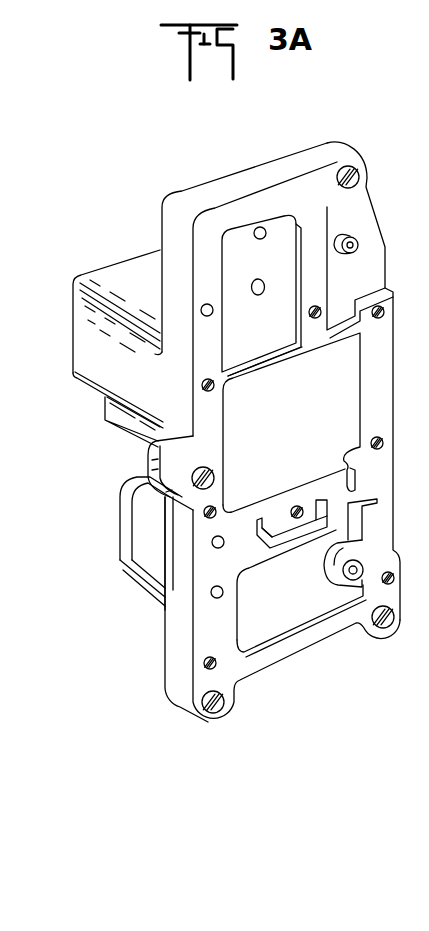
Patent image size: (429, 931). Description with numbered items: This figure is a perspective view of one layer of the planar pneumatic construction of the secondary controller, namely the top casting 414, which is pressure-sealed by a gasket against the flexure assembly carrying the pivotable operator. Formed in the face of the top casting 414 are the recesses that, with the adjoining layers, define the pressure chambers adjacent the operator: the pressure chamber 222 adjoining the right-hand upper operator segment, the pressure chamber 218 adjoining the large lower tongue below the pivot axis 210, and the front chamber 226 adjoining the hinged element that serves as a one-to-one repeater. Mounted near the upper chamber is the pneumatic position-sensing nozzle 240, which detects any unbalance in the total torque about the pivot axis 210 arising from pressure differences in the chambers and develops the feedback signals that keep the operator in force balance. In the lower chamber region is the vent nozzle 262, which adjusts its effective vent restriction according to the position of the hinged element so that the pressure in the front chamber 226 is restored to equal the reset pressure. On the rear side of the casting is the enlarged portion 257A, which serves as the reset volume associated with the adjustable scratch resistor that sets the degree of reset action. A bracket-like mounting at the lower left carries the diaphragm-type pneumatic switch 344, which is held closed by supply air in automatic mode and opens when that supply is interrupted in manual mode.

The top casting 414 is at (288, 428).
The enlarged portion 257A is at (123, 272).
The pneumatic position-sensing nozzle 240 is at (355, 240).
The pressure chamber 222 is at (278, 336).
The pivot axis 210 is at (290, 358).
The pressure chamber 218 is at (290, 442).
The front chamber 226 is at (298, 609).
The vent nozzle 262 is at (368, 560).
The diaphragm-type pneumatic switch 344 is at (117, 573).